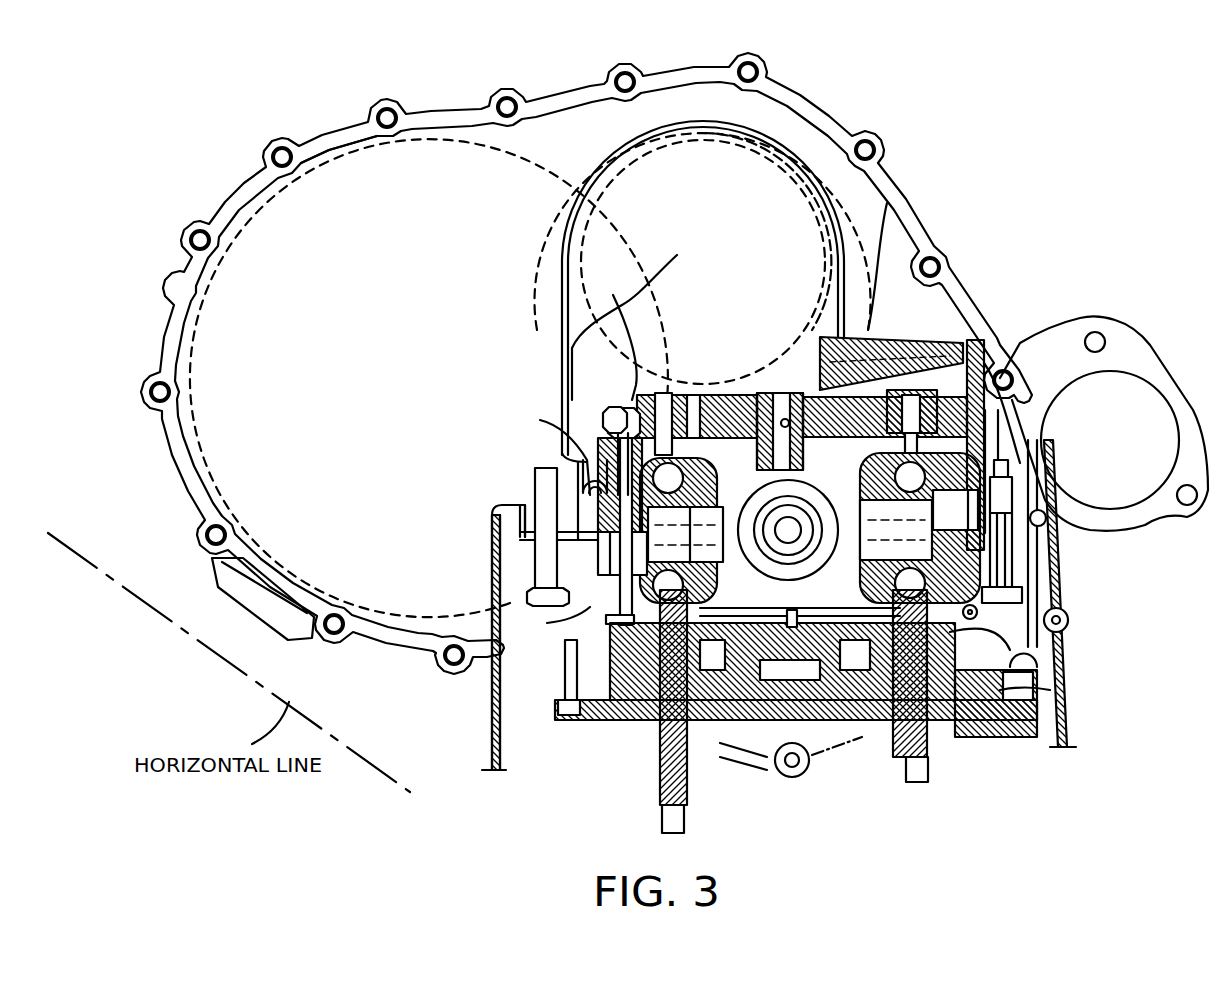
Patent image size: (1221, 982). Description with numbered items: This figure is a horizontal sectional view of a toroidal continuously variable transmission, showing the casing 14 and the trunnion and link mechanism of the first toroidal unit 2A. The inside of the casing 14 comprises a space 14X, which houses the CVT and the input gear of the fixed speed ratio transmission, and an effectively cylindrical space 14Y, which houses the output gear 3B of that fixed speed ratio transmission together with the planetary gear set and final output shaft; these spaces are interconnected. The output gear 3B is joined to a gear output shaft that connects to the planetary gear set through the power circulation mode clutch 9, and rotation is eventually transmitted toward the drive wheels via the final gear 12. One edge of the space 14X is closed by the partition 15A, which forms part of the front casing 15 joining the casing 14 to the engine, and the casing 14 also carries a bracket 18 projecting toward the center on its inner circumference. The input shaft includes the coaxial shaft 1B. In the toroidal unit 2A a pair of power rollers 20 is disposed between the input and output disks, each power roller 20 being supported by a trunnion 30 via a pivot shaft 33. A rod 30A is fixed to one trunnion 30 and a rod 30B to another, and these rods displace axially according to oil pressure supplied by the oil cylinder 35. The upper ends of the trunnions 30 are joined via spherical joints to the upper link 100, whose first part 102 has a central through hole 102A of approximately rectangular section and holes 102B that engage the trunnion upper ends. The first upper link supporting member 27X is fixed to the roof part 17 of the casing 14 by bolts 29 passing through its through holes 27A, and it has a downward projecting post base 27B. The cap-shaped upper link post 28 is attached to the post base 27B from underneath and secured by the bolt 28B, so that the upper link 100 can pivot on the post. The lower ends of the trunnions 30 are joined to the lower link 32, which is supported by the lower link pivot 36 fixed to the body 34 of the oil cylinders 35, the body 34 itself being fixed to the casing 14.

The shaft 1B is at (763, 527).
The first toroidal unit 2A is at (955, 760).
The output gear 3B is at (588, 137).
The power circulation mode clutch 9 is at (700, 140).
The final gear 12 is at (247, 228).
The casing 14 is at (1063, 695).
The space 14X is at (535, 718).
The cylindrical space 14Y is at (740, 178).
The front casing 15 is at (468, 85).
The partition 15A is at (333, 137).
The roof part 17 is at (883, 325).
The bracket 18 is at (590, 453).
The power roller 20 is at (736, 746).
The through hole 27A is at (905, 338).
The post base 27B is at (763, 370).
The first upper link supporting member 27X is at (925, 362).
The upper link post 28 is at (816, 440).
The bolt 28B is at (868, 459).
The bolt 29 is at (887, 203).
The trunnion 30 is at (612, 603).
The rod 30A is at (690, 800).
The rod 30B is at (930, 782).
The lower link 32 is at (1015, 650).
The pivot shaft 33 is at (613, 557).
The body 34 is at (583, 722).
The oil cylinder 35 is at (620, 705).
The lower link pivot 36 is at (765, 625).
The upper link 100 is at (714, 392).
The first part 102 is at (575, 425).
The through hole 102A is at (702, 530).
The hole 102B is at (639, 315).